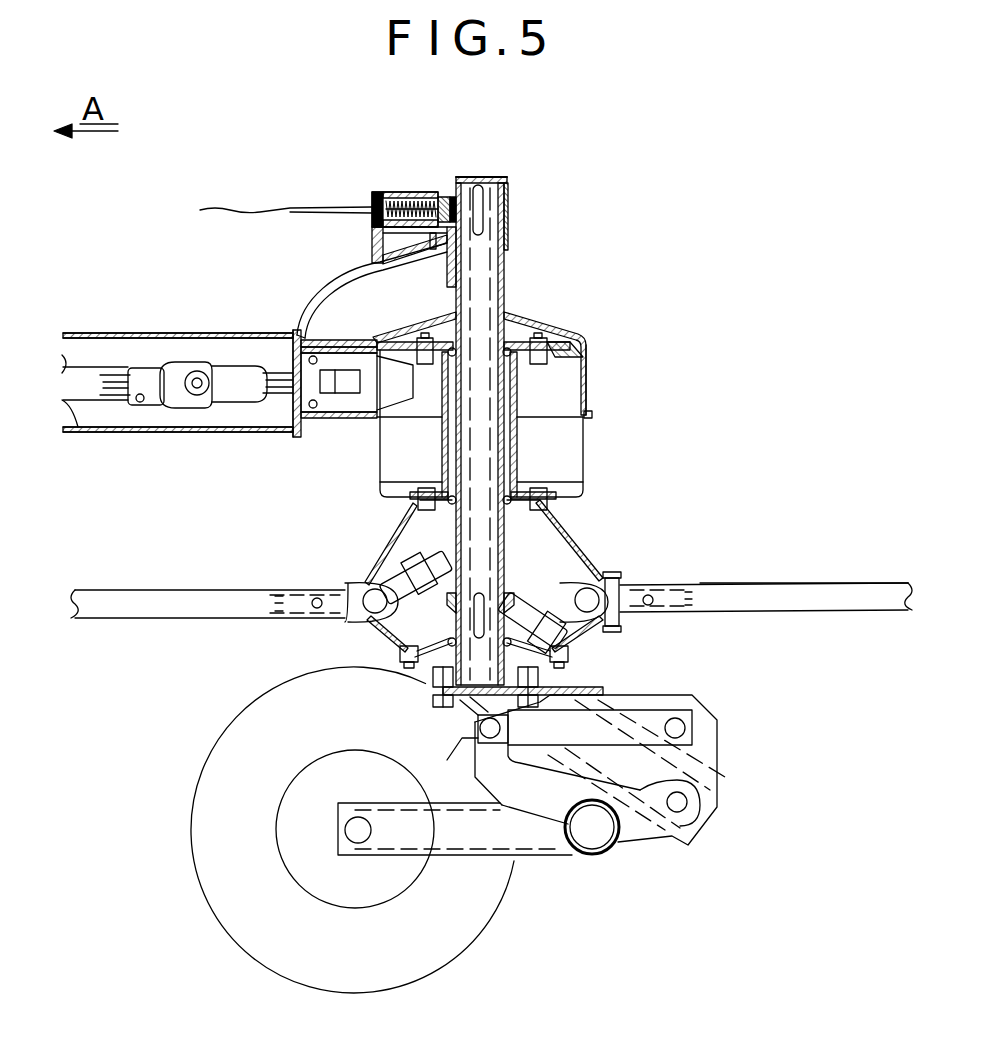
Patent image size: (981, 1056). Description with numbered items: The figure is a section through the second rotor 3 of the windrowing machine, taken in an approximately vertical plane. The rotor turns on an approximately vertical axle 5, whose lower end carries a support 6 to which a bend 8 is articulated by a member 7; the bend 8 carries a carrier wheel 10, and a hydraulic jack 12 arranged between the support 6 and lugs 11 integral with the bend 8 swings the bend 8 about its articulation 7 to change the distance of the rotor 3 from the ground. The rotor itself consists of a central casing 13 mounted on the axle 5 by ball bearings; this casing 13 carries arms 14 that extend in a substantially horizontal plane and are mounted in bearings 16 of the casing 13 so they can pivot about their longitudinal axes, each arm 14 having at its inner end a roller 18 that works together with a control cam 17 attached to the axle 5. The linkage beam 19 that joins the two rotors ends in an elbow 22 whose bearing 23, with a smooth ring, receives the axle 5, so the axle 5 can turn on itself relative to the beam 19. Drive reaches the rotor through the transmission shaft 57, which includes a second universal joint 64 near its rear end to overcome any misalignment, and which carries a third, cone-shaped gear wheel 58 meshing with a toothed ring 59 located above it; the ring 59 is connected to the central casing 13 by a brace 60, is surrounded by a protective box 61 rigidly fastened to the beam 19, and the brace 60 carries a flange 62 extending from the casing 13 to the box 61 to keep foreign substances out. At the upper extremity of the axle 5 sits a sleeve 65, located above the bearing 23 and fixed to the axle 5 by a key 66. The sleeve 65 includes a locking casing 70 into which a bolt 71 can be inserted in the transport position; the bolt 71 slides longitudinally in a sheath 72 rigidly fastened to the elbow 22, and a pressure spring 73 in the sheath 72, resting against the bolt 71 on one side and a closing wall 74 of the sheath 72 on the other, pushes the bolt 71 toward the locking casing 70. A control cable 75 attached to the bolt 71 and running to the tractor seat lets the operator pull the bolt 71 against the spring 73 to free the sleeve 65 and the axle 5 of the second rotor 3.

The second rotor 3 is at (723, 590).
The approximately vertical axle 5 is at (490, 180).
The support 6 is at (700, 765).
The articulation member 7 is at (680, 805).
The bend 8 is at (530, 832).
The carrier wheel 10 is at (228, 855).
The lug 11 is at (503, 805).
The hydraulic jack 12 is at (690, 710).
The central casing 13 is at (572, 536).
The arm 14 is at (818, 588).
The bearing 16 is at (618, 585).
The control cam 17 is at (515, 612).
The roller 18 is at (605, 627).
The linkage beam 19 is at (122, 340).
The elbow 22 is at (335, 320).
The bearing 23 is at (507, 290).
The transmission shaft 57 is at (83, 390).
The third gear wheel 58 is at (400, 380).
The toothed ring 59 is at (575, 340).
The brace 60 is at (522, 435).
The protective box 61 is at (590, 388).
The flange 62 is at (588, 492).
The second universal joint 64 is at (196, 365).
The sleeve 65 is at (507, 205).
The key 66 is at (483, 222).
The locking casing 70 is at (453, 198).
The bolt 71 is at (436, 196).
The sheath 72 is at (398, 195).
The pressure spring 73 is at (372, 232).
The closing wall 74 is at (372, 212).
The control cable 75 is at (242, 208).